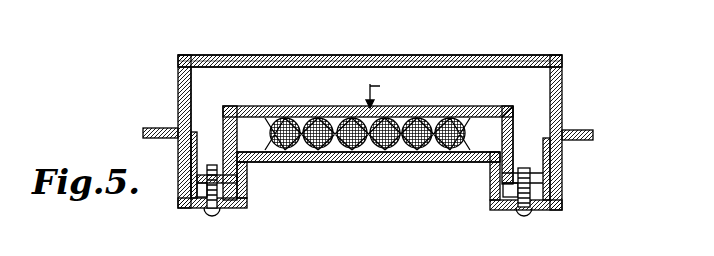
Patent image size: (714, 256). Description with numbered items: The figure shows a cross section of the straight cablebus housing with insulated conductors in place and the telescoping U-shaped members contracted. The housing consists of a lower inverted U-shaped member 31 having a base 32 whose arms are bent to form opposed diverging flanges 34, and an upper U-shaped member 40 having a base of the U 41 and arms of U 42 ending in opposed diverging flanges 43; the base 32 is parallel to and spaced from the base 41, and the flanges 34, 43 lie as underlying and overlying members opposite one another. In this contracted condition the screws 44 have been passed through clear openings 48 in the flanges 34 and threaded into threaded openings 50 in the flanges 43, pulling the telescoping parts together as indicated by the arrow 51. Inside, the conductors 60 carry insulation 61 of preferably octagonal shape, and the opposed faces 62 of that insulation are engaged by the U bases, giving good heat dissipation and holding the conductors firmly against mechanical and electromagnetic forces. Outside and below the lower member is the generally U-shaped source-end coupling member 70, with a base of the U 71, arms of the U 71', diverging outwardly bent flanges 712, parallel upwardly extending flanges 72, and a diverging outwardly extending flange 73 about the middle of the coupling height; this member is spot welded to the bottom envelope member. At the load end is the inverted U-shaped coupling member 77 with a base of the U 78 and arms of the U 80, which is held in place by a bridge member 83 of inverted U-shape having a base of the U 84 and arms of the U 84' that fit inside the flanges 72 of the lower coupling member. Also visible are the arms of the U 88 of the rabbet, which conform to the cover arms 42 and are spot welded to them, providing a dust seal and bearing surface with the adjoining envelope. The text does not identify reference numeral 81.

The arms of the U 80 is at (179, 70).
The base of the U 78 is at (335, 58).
The inverted U-shaped coupling member 77 is at (394, 36).
The bridge member 83 is at (476, 68).
The base of the U 84 is at (370, 47).
The arms of the U 84' is at (211, 133).
The left side wall 81 is at (172, 128).
The diverging outwardly bent flanges 712 is at (196, 210).
The parallel upwardly extending flanges 72 is at (185, 176).
The opposed or diverging flanges 43 is at (196, 172).
The opposed or diverging flanges 34 is at (233, 212).
The U-shaped member 40 is at (344, 106).
The insulation 61 is at (262, 132).
The opposed faces 62 is at (460, 110).
The base of the U 41 is at (487, 108).
The arms of U 42 is at (516, 116).
The arms of the U 88 is at (516, 176).
The arrow 51 is at (383, 90).
The conductors 60 is at (292, 116).
The inverted U-shaped member 31 is at (395, 163).
The base 32 is at (330, 163).
The generally U-shaped member 70 is at (368, 185).
The arms of the U 71' is at (262, 195).
The base of the U 71 is at (458, 180).
The clear openings 48 is at (500, 212).
The threaded openings 50 is at (556, 172).
The screws 44 is at (522, 212).
The diverging outwardly extending flange 73 is at (152, 141).